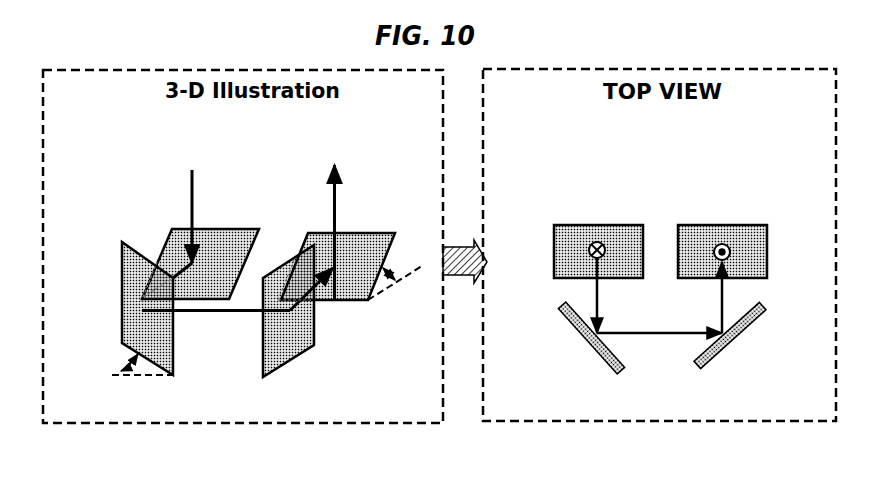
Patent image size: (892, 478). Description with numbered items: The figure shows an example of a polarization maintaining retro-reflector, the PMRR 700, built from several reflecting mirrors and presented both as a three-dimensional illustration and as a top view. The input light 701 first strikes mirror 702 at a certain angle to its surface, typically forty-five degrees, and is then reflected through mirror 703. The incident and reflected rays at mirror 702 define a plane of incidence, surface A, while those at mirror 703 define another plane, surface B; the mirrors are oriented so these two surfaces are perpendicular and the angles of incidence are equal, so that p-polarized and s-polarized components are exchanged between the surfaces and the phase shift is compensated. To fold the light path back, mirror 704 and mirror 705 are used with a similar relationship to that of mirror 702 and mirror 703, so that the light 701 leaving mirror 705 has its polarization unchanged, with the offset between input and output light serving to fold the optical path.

The PMRR 700 is at (262, 166).
The input light 701 is at (188, 207).
The mirror 702 is at (180, 245).
The mirror 703 is at (137, 315).
The mirror 704 is at (300, 338).
The mirror 705 is at (368, 247).